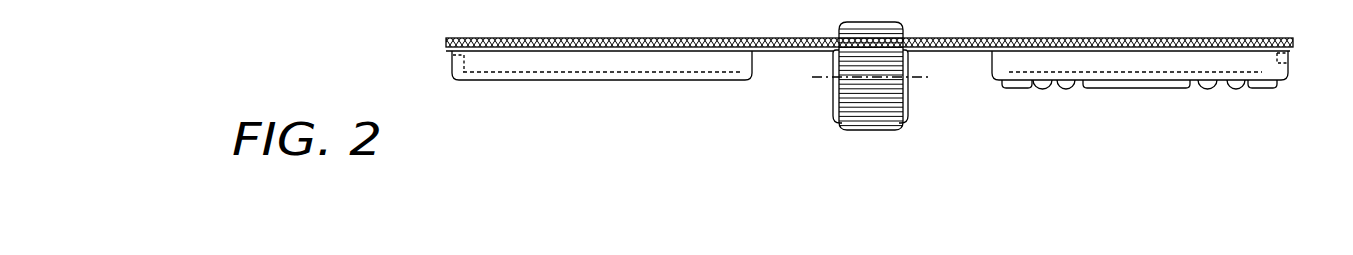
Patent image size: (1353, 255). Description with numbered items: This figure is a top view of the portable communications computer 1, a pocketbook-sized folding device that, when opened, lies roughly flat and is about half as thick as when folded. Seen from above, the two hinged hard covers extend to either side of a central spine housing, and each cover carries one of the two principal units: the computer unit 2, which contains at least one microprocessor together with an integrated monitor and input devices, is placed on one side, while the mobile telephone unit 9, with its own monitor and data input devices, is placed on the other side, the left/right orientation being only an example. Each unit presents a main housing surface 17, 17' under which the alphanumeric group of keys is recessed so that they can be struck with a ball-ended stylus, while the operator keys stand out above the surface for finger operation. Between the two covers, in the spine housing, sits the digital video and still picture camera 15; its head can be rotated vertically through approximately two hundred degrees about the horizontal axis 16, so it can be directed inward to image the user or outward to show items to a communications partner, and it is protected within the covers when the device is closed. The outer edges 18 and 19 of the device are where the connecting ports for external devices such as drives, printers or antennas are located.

The portable communications computer 1 is at (460, 13).
The computer unit 2 is at (1102, 58).
The mobile telephone unit 9 is at (657, 63).
The digital video and still picture camera 15 is at (872, 130).
The horizontal axis 16 is at (825, 77).
The main housing surface 17 is at (1135, 102).
The circuit board 17' is at (602, 100).
The edge 18 is at (452, 55).
The edge 19 is at (1290, 58).